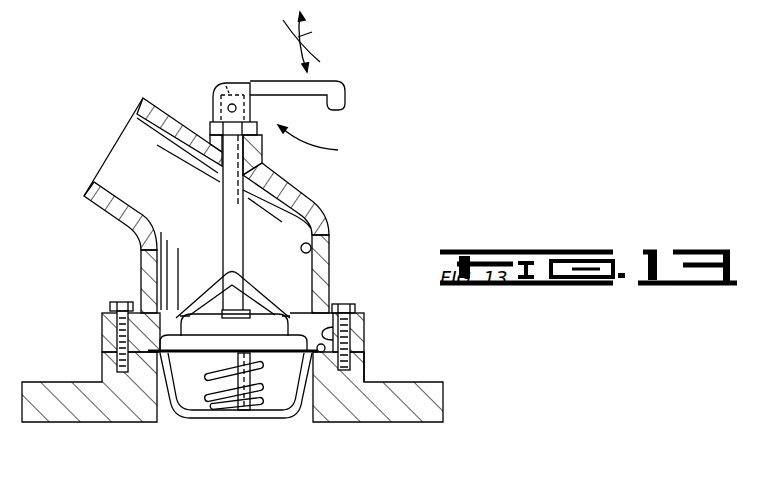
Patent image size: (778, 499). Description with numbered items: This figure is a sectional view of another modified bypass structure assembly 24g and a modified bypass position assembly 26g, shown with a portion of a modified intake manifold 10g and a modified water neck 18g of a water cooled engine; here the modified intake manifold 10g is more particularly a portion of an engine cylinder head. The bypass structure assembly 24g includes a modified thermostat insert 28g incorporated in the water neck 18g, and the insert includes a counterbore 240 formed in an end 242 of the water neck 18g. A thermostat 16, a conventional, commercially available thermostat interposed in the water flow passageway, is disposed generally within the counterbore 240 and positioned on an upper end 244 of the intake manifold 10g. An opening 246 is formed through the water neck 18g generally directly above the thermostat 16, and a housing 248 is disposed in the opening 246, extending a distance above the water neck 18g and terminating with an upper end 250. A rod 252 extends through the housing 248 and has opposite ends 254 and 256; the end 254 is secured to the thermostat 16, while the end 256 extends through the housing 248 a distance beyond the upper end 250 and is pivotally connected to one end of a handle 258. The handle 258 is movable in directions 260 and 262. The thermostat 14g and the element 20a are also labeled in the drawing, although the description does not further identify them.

The modified intake manifold 10g is at (450, 400).
The thermostat 14g is at (175, 412).
The thermostat 16 is at (222, 278).
The modified water neck 18g is at (317, 200).
The seal / gasket 20a is at (330, 250).
The modified bypass structure assembly 24g is at (319, 316).
The modified bypass position assembly 26g is at (326, 145).
The modified thermostat insert 28g is at (146, 312).
The counterbore 240 is at (335, 323).
The end of the water neck 242 is at (365, 365).
The upper end of the intake manifold 244 is at (297, 417).
The opening 246 is at (310, 230).
The housing 248 is at (205, 106).
The upper end of the housing 250 is at (250, 98).
The rod 252 is at (233, 225).
The end of the rod 254 is at (250, 275).
The end of the rod 256 is at (218, 63).
The handle 258 is at (338, 82).
The direction 260 is at (320, 45).
The direction 262 is at (305, 32).